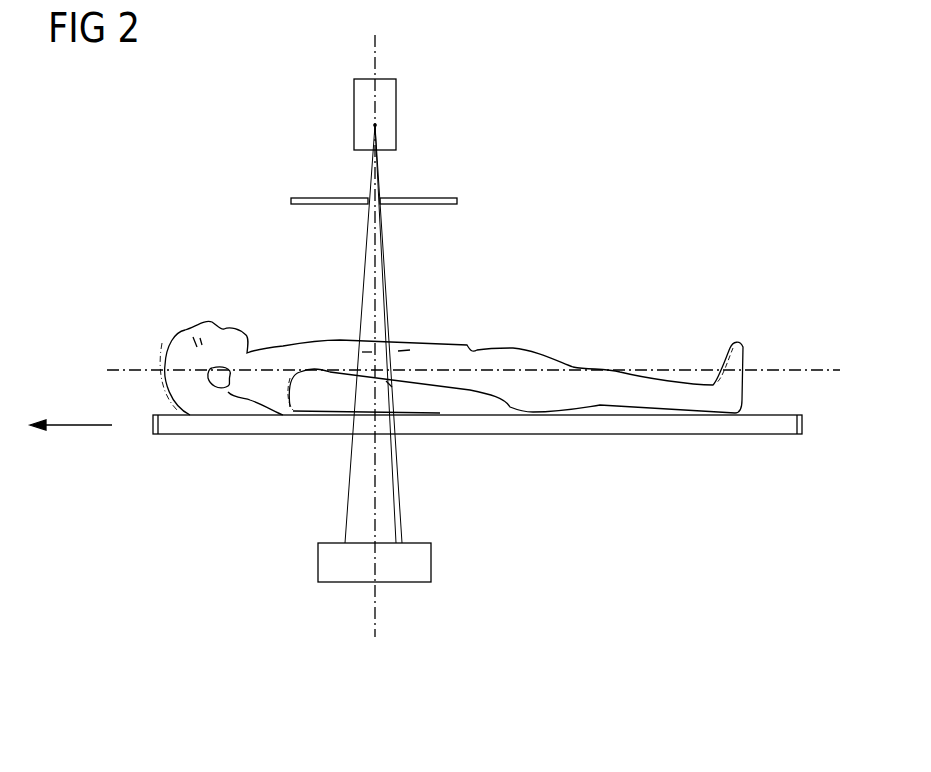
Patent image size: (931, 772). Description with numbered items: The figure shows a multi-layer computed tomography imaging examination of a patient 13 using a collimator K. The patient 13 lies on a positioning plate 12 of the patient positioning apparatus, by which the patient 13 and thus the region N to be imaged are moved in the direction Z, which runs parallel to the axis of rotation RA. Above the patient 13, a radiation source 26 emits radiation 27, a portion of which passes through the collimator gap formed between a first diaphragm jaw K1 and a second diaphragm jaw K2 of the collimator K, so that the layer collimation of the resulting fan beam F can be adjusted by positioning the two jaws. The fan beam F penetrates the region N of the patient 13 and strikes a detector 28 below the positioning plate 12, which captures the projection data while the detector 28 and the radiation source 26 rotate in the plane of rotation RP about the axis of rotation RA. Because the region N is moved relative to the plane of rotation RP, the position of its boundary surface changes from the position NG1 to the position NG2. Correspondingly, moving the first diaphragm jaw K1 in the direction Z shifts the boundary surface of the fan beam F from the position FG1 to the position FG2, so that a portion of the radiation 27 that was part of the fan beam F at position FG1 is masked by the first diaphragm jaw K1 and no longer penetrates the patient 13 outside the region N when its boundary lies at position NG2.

The positioning plate 12 is at (770, 428).
The patient 13 is at (659, 388).
The radiation source 26 is at (362, 118).
The radiation 27 is at (370, 175).
The detector 28 is at (422, 563).
The collimator K is at (376, 161).
The first diaphragm jaw K1 is at (450, 200).
The second diaphragm jaw K2 is at (291, 200).
The fan beam F is at (402, 338).
The first position of the fan beam boundary surface FG1 is at (402, 527).
The second position of the fan beam boundary surface FG2 is at (396, 491).
The region to be imaged N is at (367, 352).
The first position of the boundary surface of the region to be imaged NG1 is at (400, 352).
The second position of the boundary surface of the region to be imaged NG2 is at (389, 384).
The axis of rotation RA is at (790, 370).
The plane of rotation RP is at (377, 618).
The direction Z is at (78, 423).